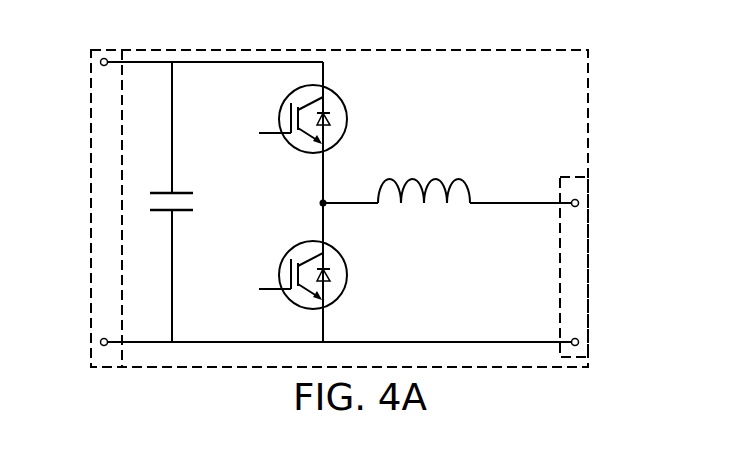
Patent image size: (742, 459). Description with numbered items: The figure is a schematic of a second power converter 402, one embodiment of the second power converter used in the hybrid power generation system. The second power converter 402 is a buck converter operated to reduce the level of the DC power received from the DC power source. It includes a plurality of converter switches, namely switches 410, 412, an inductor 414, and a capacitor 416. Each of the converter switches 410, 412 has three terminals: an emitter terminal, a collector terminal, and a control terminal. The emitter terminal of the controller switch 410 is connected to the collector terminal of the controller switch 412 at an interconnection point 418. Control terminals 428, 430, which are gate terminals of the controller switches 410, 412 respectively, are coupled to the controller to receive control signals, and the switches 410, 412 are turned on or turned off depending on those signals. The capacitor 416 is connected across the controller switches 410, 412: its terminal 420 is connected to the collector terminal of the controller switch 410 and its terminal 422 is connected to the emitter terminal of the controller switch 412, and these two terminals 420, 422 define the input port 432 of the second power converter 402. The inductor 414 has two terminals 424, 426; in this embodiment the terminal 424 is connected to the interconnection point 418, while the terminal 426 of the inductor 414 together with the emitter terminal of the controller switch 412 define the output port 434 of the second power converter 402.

The second power converter 402 is at (331, 48).
The converter switch 410 is at (280, 101).
The converter switch 412 is at (282, 262).
The inductor 414 is at (455, 177).
The capacitor 416 is at (202, 170).
The interconnection point 418 is at (328, 200).
The terminal 420 is at (173, 69).
The terminal 422 is at (210, 302).
The terminal 424 is at (357, 206).
The terminal 426 is at (515, 205).
The control terminal 428 is at (268, 135).
The control terminal 430 is at (273, 293).
The input port 432 is at (96, 210).
The output port 434 is at (586, 261).